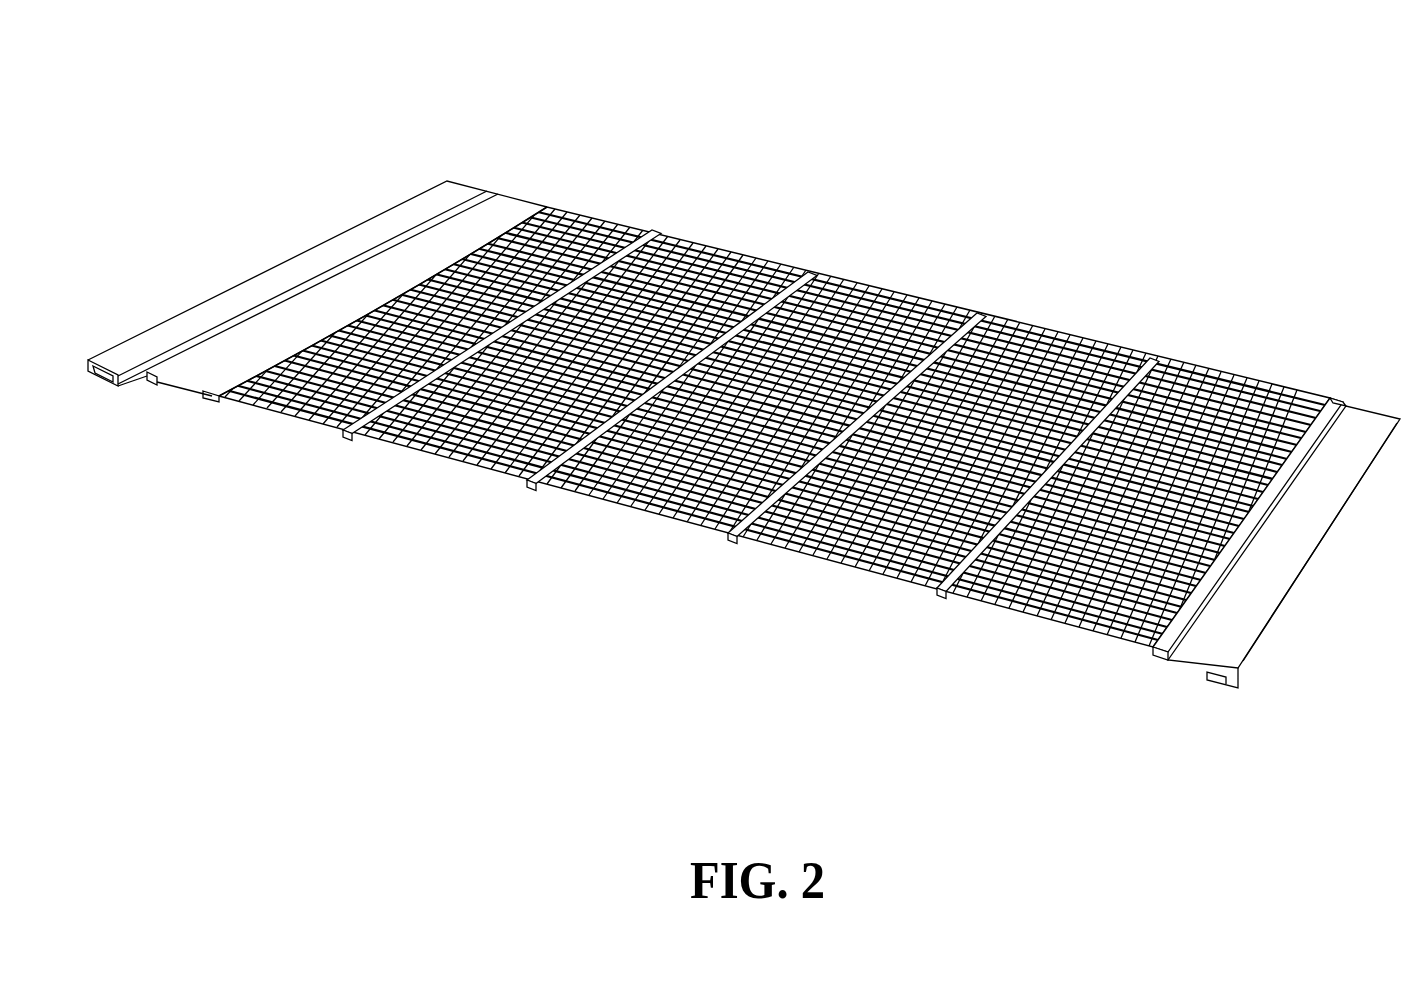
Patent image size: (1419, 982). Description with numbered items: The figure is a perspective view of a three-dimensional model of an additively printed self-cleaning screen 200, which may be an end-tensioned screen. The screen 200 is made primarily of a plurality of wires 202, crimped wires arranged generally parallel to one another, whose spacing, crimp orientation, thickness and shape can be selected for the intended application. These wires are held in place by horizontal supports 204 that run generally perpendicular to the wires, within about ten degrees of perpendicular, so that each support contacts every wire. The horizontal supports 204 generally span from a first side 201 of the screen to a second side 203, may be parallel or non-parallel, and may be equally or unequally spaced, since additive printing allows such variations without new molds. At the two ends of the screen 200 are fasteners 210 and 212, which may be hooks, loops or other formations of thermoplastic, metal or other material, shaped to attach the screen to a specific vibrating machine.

The self-cleaning screen 200 is at (1184, 106).
The first side 201 is at (648, 520).
The plurality of wires 202 is at (1060, 341).
The second side 203 is at (880, 287).
The horizontal supports 204 is at (209, 400).
The fastener 210 is at (273, 270).
The fastener 212 is at (1290, 568).